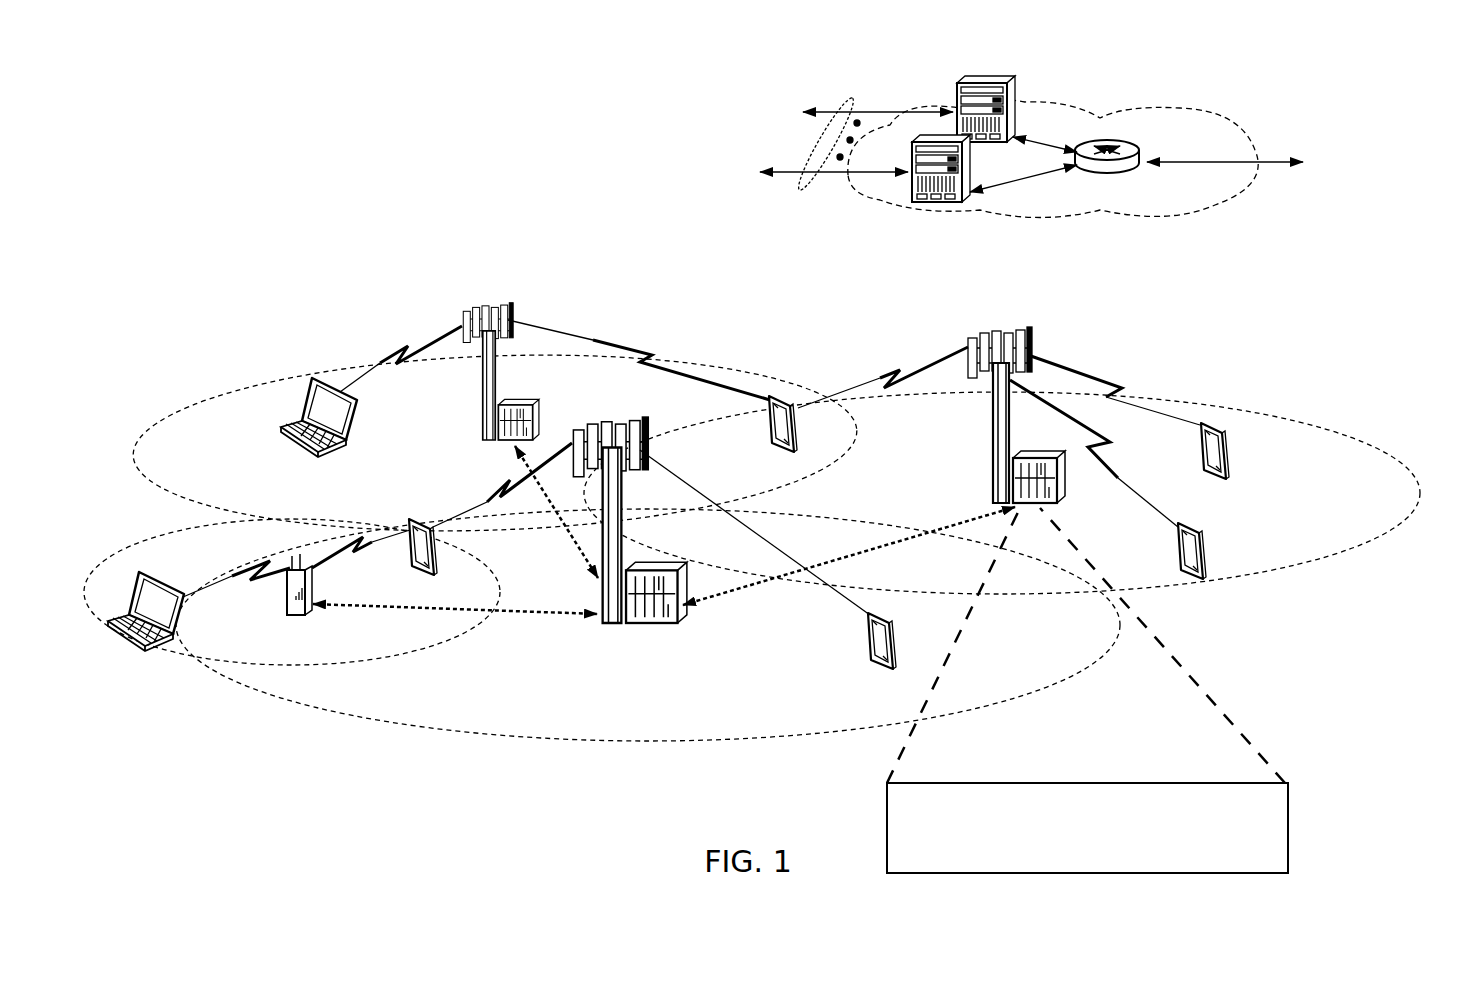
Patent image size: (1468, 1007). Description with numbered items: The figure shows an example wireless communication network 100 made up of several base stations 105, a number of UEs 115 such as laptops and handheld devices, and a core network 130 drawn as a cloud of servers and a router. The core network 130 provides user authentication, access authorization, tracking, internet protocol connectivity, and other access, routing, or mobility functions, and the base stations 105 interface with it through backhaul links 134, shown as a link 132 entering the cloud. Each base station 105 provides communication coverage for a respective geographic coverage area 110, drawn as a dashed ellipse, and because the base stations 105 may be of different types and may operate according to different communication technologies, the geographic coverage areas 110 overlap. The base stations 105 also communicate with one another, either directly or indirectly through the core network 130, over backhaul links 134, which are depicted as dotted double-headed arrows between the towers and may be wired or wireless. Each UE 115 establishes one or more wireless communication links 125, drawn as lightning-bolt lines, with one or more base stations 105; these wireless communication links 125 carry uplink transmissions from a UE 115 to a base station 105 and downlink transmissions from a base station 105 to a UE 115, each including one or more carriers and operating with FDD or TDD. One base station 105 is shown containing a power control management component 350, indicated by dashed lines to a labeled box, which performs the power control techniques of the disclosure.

The wireless communication network 100 is at (1333, 831).
The base station 105 is at (483, 428).
The geographic coverage area 110 is at (165, 480).
The UE 115 is at (305, 452).
The wireless communication link 125 is at (400, 352).
The core network 130 is at (1075, 215).
The backhaul link 132 is at (800, 190).
The backhaul link 134 is at (553, 508).
The power control management component 350 is at (1087, 690).